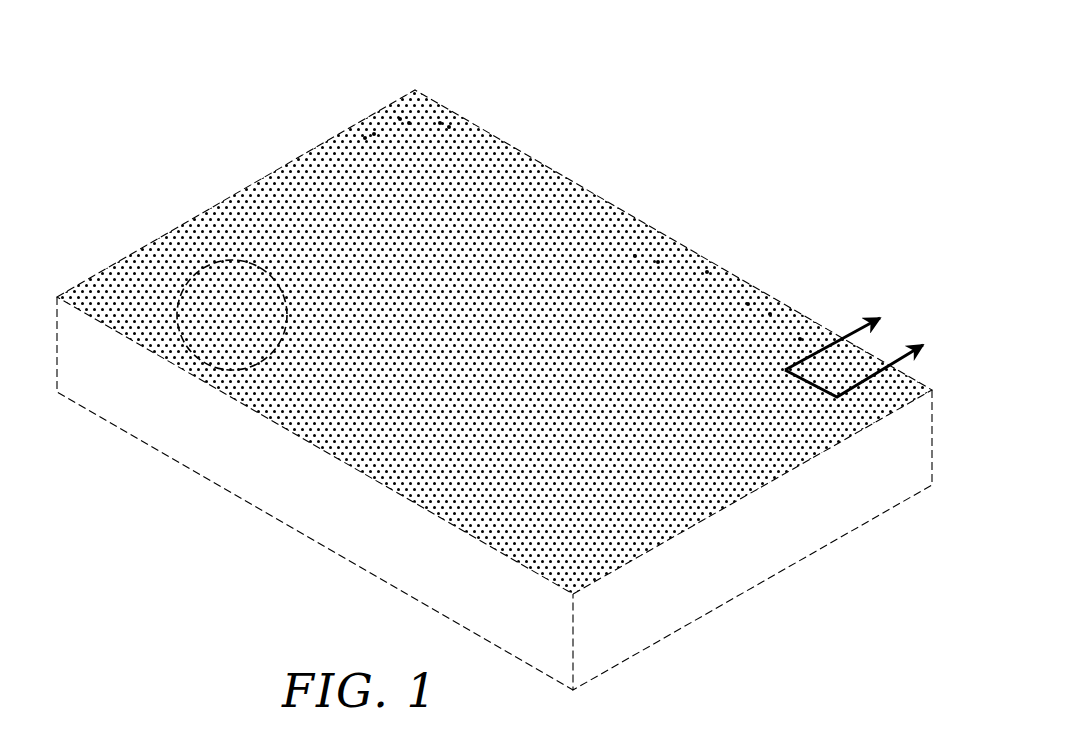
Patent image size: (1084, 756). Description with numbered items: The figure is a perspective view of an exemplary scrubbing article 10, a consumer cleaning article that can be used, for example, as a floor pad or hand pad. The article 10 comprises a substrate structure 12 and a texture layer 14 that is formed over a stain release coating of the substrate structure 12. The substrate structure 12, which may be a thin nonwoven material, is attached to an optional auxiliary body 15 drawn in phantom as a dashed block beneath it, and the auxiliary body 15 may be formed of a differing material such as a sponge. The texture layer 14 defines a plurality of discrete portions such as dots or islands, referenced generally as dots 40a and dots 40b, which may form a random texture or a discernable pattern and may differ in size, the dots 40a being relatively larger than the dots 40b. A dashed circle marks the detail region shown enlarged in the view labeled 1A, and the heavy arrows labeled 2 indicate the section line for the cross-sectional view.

The scrubbing article 10 is at (189, 126).
The substrate structure 12 is at (558, 237).
The texture layer 14 is at (440, 117).
The auxiliary body 15 is at (279, 482).
The dots 40a is at (707, 268).
The dots 40b is at (800, 335).
The section line 2 is at (867, 344).
The detail view 1A is at (181, 333).